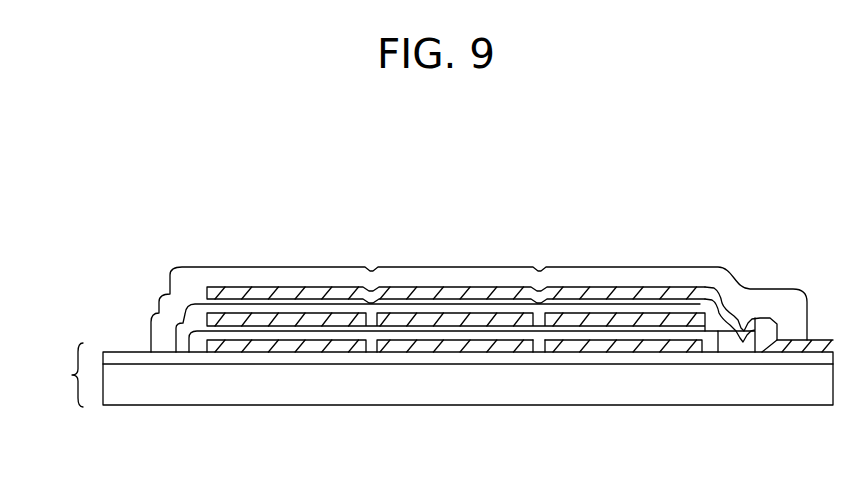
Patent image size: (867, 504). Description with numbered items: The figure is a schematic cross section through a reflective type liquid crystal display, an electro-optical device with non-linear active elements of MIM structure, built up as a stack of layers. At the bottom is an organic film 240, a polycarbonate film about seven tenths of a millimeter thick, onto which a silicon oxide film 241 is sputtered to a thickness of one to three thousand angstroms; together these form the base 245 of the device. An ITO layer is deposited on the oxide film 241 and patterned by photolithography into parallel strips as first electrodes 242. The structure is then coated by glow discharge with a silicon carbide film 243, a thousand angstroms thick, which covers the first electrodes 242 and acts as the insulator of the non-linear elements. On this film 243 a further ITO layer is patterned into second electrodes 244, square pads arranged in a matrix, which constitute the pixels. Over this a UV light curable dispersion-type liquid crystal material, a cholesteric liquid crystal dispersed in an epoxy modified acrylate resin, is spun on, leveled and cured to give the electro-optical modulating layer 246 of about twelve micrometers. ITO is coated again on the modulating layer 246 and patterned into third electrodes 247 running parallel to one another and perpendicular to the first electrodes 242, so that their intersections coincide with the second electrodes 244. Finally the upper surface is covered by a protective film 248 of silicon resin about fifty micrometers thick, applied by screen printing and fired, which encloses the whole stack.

The organic film 240 is at (805, 395).
The silicon oxide film 241 is at (738, 357).
The first electrodes 242 is at (618, 348).
The SixCy film 243 is at (538, 341).
The second electrodes 244 is at (421, 326).
The base (substrate with insulating film) 245 is at (50, 375).
The electro-optical modulating layer 246 is at (487, 305).
The third electrodes 247 is at (293, 293).
The protective layer 248 is at (640, 270).